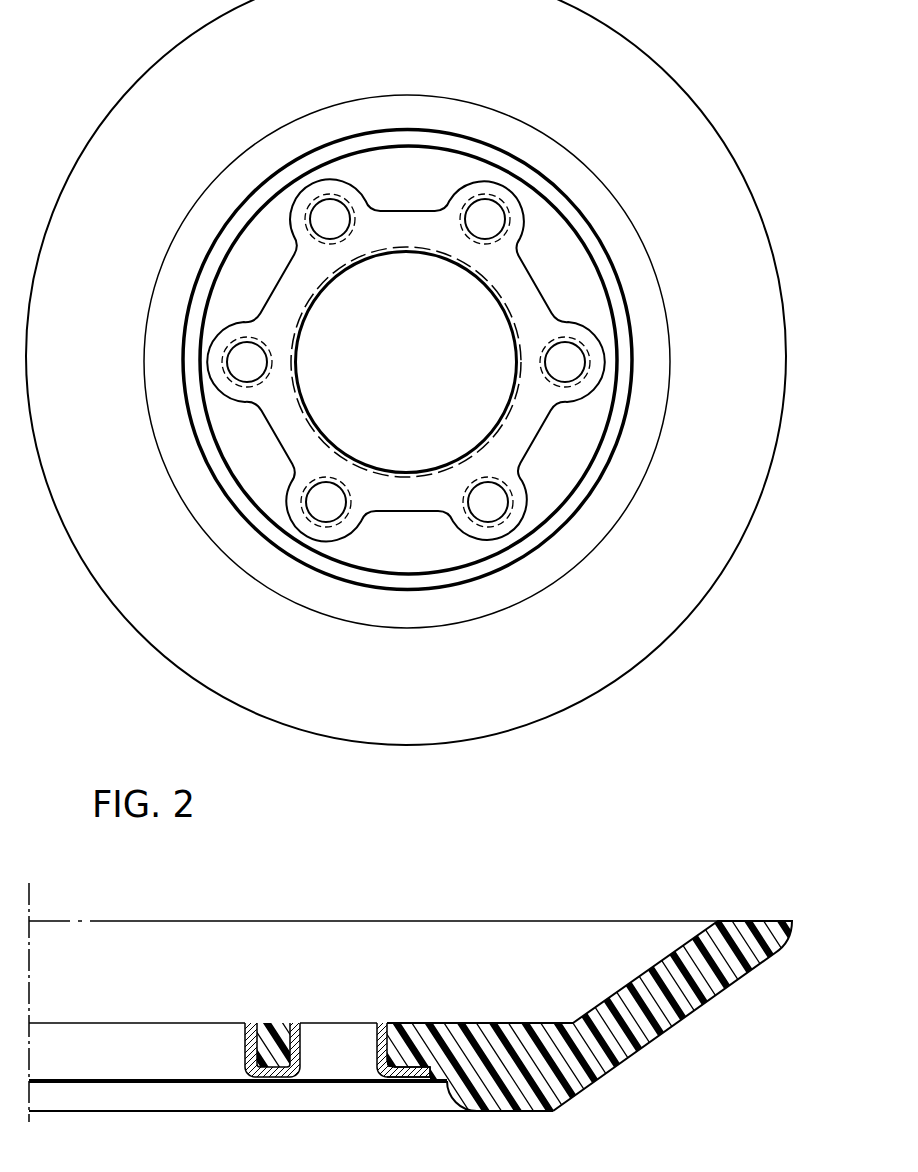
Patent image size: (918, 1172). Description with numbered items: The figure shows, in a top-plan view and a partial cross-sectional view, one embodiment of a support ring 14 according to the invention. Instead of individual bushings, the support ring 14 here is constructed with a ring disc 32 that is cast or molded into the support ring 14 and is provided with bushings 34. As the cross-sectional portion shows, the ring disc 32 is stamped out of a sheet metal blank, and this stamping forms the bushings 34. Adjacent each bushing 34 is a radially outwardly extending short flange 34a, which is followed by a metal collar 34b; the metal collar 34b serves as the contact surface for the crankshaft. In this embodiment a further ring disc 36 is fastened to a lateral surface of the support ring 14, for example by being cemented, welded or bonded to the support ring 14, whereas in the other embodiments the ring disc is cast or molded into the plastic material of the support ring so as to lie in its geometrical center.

The support ring 14 is at (690, 122).
The ring disc 32 is at (541, 281).
The bushings 34 is at (322, 210).
The short flange 34a is at (277, 427).
The metal collar 34b is at (344, 456).
The ring disc 36 is at (527, 425).